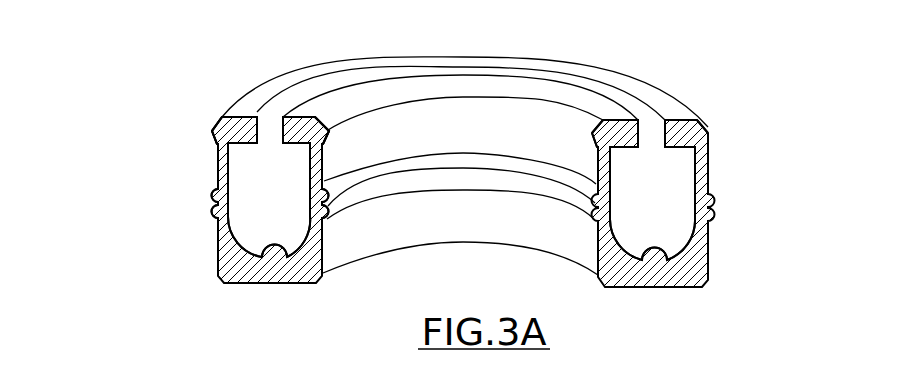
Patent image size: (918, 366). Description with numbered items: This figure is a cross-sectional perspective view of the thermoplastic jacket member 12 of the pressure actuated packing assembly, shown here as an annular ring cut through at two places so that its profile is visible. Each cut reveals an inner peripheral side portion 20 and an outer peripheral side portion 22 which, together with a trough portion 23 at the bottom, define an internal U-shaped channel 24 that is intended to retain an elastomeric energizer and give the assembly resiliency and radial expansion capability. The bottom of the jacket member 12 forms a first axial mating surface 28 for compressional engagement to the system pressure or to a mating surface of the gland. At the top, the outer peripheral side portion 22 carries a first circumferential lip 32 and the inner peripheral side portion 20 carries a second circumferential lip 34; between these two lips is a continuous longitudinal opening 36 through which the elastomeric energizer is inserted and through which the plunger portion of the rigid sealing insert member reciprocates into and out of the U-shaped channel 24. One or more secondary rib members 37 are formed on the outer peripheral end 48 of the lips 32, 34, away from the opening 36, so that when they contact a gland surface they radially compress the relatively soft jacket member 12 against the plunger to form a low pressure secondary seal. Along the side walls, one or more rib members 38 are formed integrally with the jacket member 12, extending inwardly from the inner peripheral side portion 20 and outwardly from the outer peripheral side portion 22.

The jacket member 12 is at (216, 164).
The inner peripheral side portion 20 is at (323, 158).
The outer peripheral side portion 22 is at (217, 174).
The trough portion 23 is at (280, 268).
The U-shaped channel 24 is at (262, 225).
The first axial mating surface 28 is at (263, 285).
The first circumferential lip 32 is at (247, 137).
The second circumferential lip 34 is at (300, 132).
The continuous longitudinal opening 36 is at (273, 141).
The secondary rib members 37 is at (211, 130).
The rib members 38 is at (213, 216).
The outer peripheral end 48 is at (214, 139).